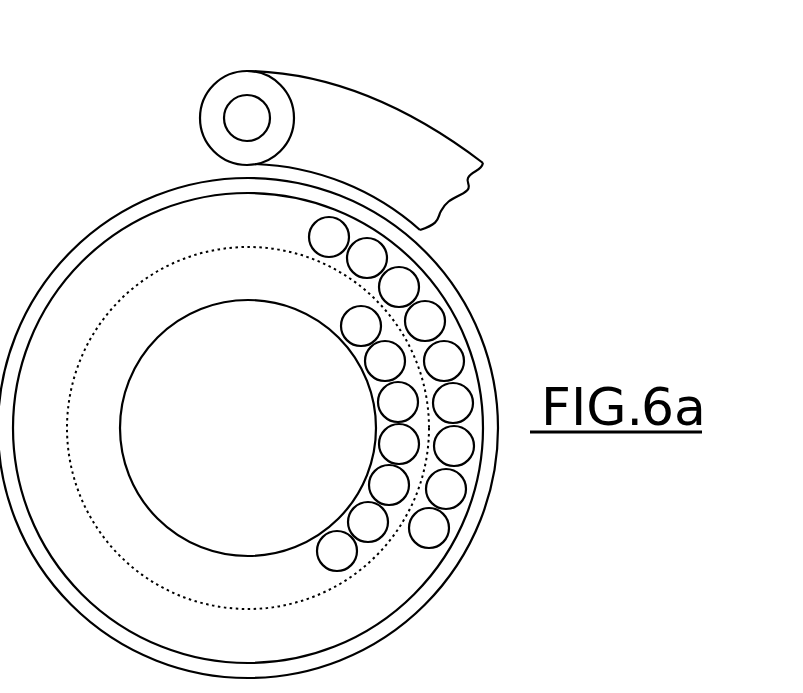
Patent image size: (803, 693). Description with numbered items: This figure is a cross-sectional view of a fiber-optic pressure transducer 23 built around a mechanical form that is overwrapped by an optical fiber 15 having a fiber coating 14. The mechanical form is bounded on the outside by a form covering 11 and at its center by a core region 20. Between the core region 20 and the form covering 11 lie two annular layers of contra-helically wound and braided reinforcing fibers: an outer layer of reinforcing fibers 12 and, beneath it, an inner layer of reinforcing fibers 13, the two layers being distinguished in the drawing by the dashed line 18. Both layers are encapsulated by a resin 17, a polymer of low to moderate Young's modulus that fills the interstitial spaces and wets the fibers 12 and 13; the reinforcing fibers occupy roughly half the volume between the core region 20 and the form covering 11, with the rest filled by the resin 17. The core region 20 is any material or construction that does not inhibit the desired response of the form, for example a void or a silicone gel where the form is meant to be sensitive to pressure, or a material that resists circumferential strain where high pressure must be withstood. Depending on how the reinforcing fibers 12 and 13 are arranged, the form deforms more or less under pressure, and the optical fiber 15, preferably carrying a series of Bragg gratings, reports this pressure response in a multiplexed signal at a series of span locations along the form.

The form covering 11 is at (72, 253).
The outer annular layer of contra-helically wound and braided reinforcing fibers 12 is at (317, 249).
The inner annular layer of contra-helically wound and braided reinforcing fibers 13 is at (373, 373).
The fiber coating 14 is at (212, 109).
The optical fiber 15 is at (247, 118).
The resin 17 is at (103, 305).
The dashed line 18 is at (192, 252).
The core region 20 is at (200, 378).
The pressure transducer 23 is at (476, 80).